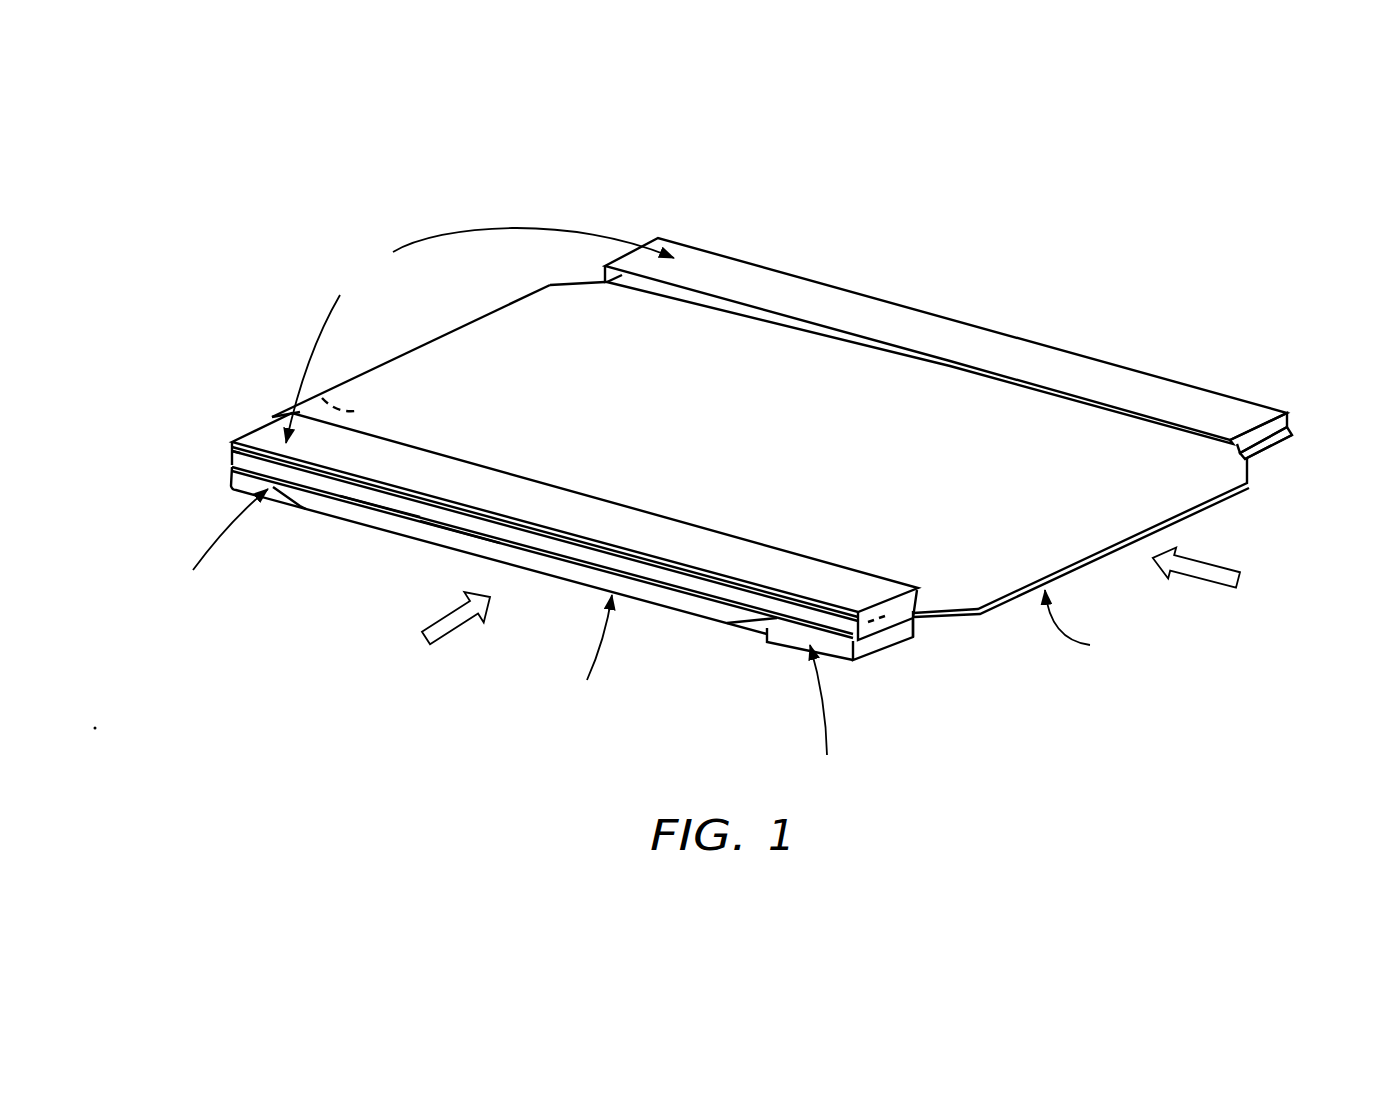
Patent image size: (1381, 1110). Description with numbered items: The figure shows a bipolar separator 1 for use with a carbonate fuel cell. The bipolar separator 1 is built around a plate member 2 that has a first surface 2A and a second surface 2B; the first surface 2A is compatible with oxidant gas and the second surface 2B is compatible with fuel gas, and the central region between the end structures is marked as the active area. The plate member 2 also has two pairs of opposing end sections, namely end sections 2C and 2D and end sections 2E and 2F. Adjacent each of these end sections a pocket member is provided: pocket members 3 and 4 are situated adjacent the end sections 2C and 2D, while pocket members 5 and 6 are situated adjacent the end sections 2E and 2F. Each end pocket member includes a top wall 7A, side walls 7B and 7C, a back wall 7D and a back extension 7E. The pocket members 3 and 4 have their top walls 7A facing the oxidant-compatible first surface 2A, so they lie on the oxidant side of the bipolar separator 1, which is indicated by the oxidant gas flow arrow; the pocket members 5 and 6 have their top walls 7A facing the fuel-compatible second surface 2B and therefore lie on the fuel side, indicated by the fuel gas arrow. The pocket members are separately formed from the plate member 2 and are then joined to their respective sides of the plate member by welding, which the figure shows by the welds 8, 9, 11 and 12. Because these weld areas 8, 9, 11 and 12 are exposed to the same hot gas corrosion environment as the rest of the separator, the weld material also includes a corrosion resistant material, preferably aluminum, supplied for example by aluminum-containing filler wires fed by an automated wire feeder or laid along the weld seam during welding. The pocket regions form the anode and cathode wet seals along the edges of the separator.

The bipolar separator 1 is at (1034, 262).
The plate member 2 is at (1293, 432).
The first surface 2A is at (313, 378).
The second surface 2B is at (512, 390).
The end section 2C is at (365, 391).
The end section 2D is at (1068, 550).
The end section 2E is at (893, 618).
The end section 2F is at (1247, 440).
The pocket member 3 is at (231, 471).
The pocket member 4 is at (870, 648).
The pocket member 5 is at (568, 510).
The pocket member 6 is at (1096, 370).
The top wall 7A is at (785, 280).
The side wall 7B is at (902, 604).
The side wall 7C is at (248, 435).
The back wall 7D is at (440, 513).
The back extension 7E is at (365, 510).
The weld 8 is at (763, 627).
The weld 9 is at (1290, 415).
The weld 11 is at (1265, 453).
The weld 12 is at (230, 465).